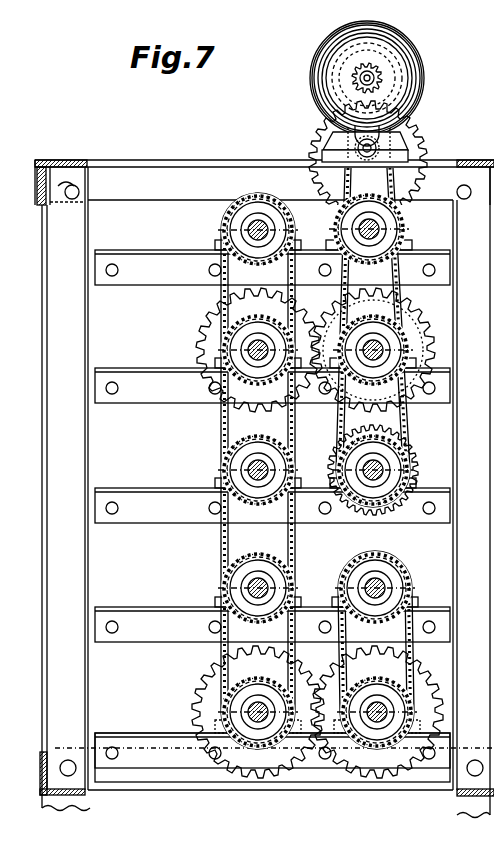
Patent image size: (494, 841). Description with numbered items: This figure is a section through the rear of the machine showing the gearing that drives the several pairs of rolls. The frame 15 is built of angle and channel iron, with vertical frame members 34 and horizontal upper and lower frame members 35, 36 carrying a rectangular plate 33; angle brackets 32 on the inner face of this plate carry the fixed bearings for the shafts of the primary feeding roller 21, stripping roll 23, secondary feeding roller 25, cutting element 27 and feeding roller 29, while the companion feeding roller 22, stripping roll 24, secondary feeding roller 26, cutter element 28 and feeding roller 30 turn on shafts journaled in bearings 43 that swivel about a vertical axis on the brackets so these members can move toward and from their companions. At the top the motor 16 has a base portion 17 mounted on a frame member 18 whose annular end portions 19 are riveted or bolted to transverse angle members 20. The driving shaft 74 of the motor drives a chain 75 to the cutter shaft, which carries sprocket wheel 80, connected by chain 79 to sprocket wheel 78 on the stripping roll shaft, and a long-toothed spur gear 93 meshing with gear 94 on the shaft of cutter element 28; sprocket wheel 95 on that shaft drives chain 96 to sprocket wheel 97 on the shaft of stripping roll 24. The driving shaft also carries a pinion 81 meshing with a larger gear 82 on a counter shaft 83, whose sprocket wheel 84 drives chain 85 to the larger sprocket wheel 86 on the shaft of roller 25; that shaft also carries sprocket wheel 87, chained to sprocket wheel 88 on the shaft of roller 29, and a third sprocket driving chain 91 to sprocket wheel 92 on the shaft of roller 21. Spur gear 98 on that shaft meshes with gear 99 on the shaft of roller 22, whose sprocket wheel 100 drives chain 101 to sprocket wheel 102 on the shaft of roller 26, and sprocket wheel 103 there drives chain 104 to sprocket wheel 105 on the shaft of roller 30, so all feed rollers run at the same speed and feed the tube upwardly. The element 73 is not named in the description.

The frame 15 is at (168, 160).
The motor 16 is at (412, 77).
The base portion 17 is at (420, 138).
The frame member 18 is at (240, 160).
The annular end portions 19 is at (70, 200).
The transverse angle members 20 is at (38, 190).
The primary feeding roller 21 is at (392, 712).
The feeding roller 22 is at (244, 708).
The stripping roll 23 is at (392, 586).
The stripping roll 24 is at (244, 586).
The secondary feeding roller 25 is at (386, 468).
The secondary feeding roller 26 is at (235, 490).
The rotary cutting element 27 is at (386, 350).
The cutter element 28 is at (246, 350).
The feeding roller 29 is at (382, 231).
The feeding roller 30 is at (230, 232).
The angle brackets 32 is at (136, 282).
The rectangular plate 33 is at (180, 223).
The vertical frame members 34 is at (46, 461).
The upper frame member 35 is at (120, 160).
The lower frame member 36 is at (290, 790).
The bearings 43 is at (292, 240).
The sprocket 73 is at (332, 207).
The driving shaft 74 is at (355, 80).
The chain 75 is at (408, 199).
The sprocket wheel 78 is at (376, 643).
The chain 79 is at (386, 315).
The sprocket wheel 80 is at (373, 350).
The pinion 81 is at (418, 58).
The gear 82 is at (376, 139).
The counter shaft 83 is at (376, 145).
The sprocket wheel 84 is at (413, 408).
The chain 85 is at (322, 187).
The sprocket wheel 86 is at (384, 424).
The sprocket wheel 87 is at (410, 440).
The sprocket wheel 88 is at (369, 237).
The chain 91 is at (346, 634).
The sprocket wheel 92 is at (377, 701).
The spur gear 93 is at (432, 338).
The spur gear 94 is at (258, 350).
The sprocket wheel 95 is at (221, 417).
The chain 96 is at (212, 312).
The sprocket wheel 97 is at (258, 579).
The spur gear 98 is at (424, 670).
The spur gear 99 is at (214, 667).
The sprocket wheel 100 is at (258, 701).
The chain 101 is at (293, 641).
The sprocket wheel 102 is at (258, 460).
The sprocket wheel 103 is at (221, 462).
The chain 104 is at (221, 430).
The sprocket wheel 105 is at (258, 236).